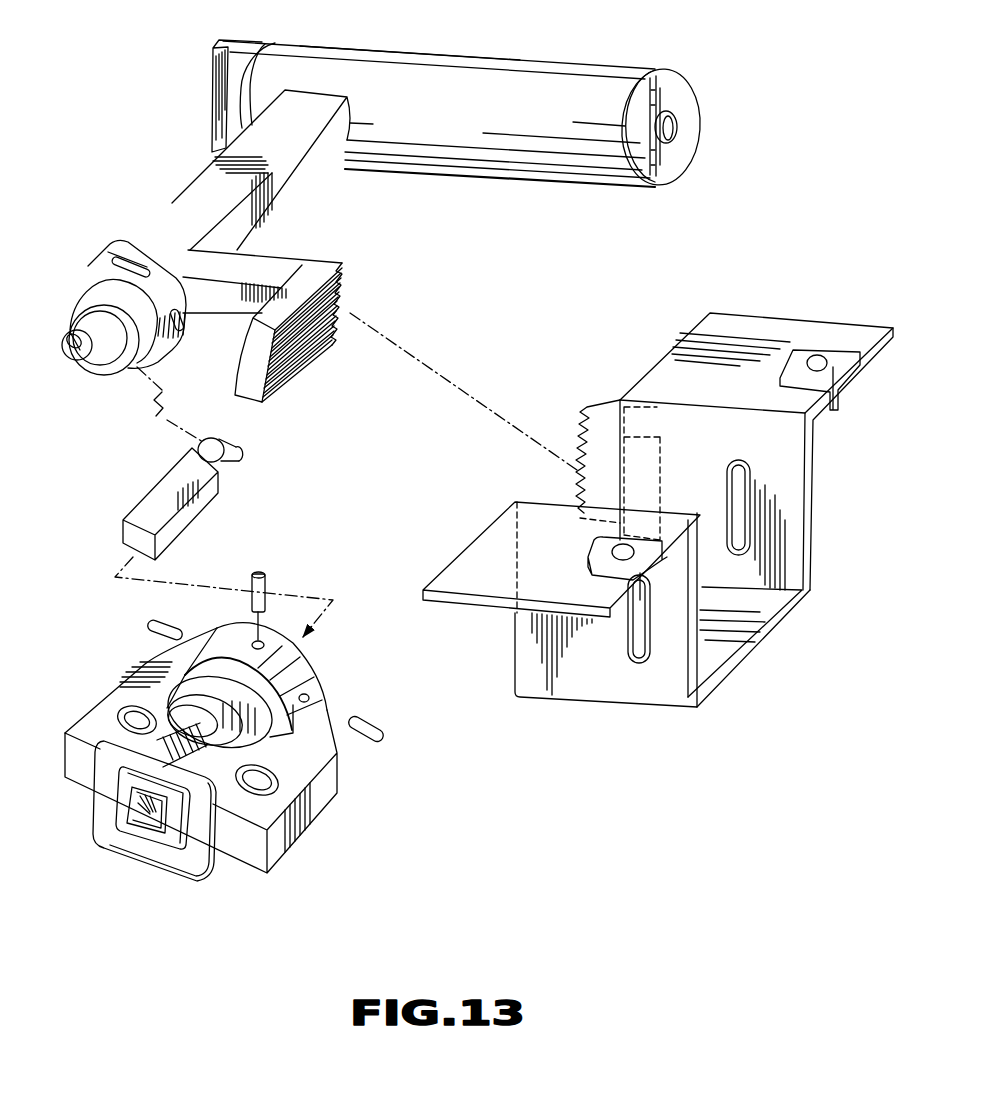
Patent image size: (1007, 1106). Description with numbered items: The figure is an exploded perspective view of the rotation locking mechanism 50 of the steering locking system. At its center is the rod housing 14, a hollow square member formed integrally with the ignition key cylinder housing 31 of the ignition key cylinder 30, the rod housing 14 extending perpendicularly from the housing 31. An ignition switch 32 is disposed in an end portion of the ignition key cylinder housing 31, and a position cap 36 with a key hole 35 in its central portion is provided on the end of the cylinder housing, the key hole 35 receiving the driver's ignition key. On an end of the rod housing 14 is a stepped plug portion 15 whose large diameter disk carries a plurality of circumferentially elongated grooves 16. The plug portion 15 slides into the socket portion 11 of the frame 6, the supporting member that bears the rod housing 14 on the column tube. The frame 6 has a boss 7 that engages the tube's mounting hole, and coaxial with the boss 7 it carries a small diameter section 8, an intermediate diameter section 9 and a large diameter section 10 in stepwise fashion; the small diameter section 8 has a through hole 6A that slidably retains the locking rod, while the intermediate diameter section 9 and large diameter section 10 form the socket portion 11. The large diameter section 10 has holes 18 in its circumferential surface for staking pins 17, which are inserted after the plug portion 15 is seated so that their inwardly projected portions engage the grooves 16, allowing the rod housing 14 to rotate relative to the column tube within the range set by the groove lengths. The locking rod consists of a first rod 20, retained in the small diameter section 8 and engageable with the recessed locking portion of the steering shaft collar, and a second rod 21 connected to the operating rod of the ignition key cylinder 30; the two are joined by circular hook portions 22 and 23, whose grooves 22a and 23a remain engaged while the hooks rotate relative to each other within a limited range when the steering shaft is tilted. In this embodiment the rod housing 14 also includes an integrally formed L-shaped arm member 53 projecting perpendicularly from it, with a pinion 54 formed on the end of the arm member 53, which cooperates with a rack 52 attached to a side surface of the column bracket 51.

The frame 6 is at (340, 778).
The through hole 6A is at (140, 822).
The boss 7 is at (152, 848).
The small diameter section 8 is at (200, 752).
The intermediate diameter section 9 is at (260, 722).
The large diameter section 10 is at (304, 717).
The socket portion 11 is at (318, 649).
The rod housing 14 is at (308, 198).
The plug portion 15 is at (98, 234).
The grooves 16 is at (138, 258).
The staking pins 17 is at (268, 582).
The holes 18 is at (254, 642).
The first rod 20 is at (150, 497).
The second rod 21 is at (100, 372).
The hook portion 22 is at (216, 437).
The groove 22a is at (228, 447).
The hook portion 23 is at (70, 358).
The groove 23a is at (72, 320).
The ignition key cylinder 30 is at (514, 183).
The ignition key cylinder housing 31 is at (532, 62).
The ignition switch 32 is at (212, 48).
The key hole 35 is at (676, 136).
The position cap 36 is at (655, 70).
The locking mechanism 50 is at (350, 309).
The column bracket 51 is at (670, 363).
The rack 52 is at (578, 468).
The arm member 53 is at (318, 252).
The pinion 54 is at (316, 350).